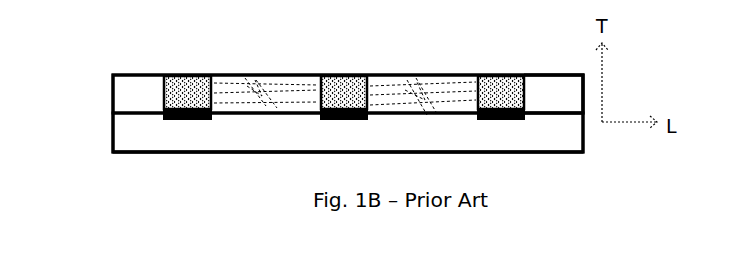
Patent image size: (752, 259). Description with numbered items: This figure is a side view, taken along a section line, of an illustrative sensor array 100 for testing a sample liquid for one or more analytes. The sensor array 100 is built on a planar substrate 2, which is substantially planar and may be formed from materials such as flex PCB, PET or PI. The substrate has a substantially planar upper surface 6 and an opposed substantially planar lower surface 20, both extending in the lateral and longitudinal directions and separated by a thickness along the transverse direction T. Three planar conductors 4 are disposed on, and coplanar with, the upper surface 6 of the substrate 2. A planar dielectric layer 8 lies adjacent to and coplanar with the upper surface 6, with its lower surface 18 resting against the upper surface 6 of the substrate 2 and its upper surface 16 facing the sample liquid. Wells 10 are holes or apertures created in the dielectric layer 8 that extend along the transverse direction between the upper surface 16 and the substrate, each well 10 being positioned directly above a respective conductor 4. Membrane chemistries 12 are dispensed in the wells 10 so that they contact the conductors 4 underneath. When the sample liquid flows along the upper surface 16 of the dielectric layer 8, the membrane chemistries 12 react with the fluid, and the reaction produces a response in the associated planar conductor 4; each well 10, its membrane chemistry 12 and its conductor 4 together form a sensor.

The sensor array 100 is at (155, 53).
The planar substrate 2 is at (137, 132).
The upper surface of the substrate 6 is at (133, 110).
The dielectric layer 8 is at (537, 98).
The well 10 is at (188, 93).
The membrane chemistries 12 is at (340, 97).
The upper surface of the dielectric layer 16 is at (445, 80).
The planar conductor 4 is at (188, 117).
The lower surface of the dielectric layer 18 is at (513, 120).
The lower surface of the substrate 20 is at (233, 148).